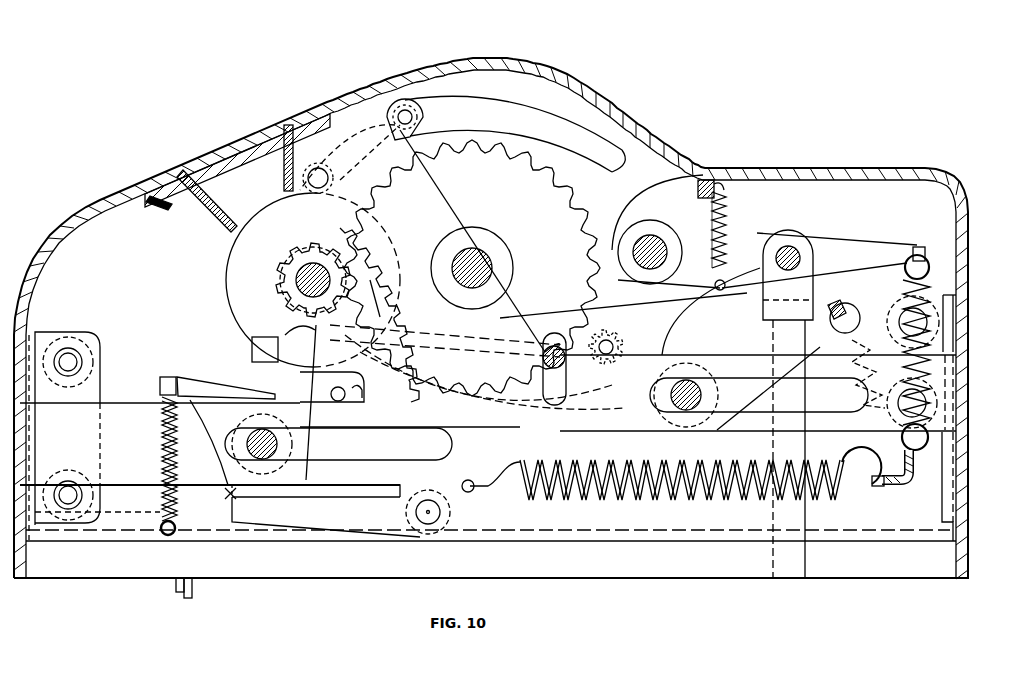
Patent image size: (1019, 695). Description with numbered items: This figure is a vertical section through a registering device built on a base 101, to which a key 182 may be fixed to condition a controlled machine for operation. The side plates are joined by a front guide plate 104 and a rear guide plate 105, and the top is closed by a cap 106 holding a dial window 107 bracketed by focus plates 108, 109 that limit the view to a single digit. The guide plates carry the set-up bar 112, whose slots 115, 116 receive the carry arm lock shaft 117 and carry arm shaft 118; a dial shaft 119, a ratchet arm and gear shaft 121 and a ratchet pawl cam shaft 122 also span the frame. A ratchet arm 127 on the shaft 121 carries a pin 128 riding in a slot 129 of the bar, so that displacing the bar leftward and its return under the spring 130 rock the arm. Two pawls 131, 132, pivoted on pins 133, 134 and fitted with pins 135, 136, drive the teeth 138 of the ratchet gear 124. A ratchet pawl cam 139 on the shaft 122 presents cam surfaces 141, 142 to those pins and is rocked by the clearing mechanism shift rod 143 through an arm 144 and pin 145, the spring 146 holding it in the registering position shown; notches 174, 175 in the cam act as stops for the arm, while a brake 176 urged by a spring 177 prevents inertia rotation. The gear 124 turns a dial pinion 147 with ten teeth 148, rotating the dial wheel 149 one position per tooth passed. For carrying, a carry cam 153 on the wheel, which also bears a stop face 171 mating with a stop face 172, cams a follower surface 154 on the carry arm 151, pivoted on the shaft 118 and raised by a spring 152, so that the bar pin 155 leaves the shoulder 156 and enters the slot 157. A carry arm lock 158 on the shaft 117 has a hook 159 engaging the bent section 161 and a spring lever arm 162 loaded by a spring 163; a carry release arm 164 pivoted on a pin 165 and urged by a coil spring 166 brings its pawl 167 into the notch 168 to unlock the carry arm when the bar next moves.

The base 101 is at (708, 562).
The front guide plate 104 is at (72, 346).
The rear guide plate 105 is at (944, 320).
The cap 106 is at (665, 160).
The dial window 107 is at (246, 122).
The focus plate 108 is at (228, 216).
The focus plate 109 is at (284, 165).
The set-up bar 112 is at (126, 468).
The slot 115 is at (364, 460).
The slot 116 is at (826, 408).
The carry arm lock shaft 117 is at (280, 444).
The carry arm shaft 118 is at (703, 397).
The dial shaft 119 is at (280, 292).
The ratchet arm and gear shaft 121 is at (494, 268).
The ratchet pawl cam shaft 122 is at (668, 250).
The ratchet gear 124 is at (584, 214).
The ratchet arm 127 is at (462, 210).
The pin 128 is at (566, 364).
The slot 129 is at (566, 384).
The spring 130 is at (660, 500).
The pawl 131 is at (405, 150).
The pawl 132 is at (492, 408).
The pin 133 is at (318, 190).
The pin 134 is at (505, 470).
The pin 135 is at (416, 111).
The pin 136 is at (690, 348).
The teeth 138 is at (522, 134).
The ratchet pawl cam 139 is at (518, 100).
The cam surface 141 is at (482, 110).
The cam surface 142 is at (446, 402).
The clearing mechanism shift rod 143 is at (790, 462).
The arm 144 is at (856, 250).
The pin 145 is at (800, 248).
The spring 146 is at (930, 292).
The dial pinion 147 is at (283, 263).
The teeth 148 is at (300, 250).
The dial wheel 149 is at (228, 302).
The carry arm 151 is at (722, 352).
The spring 152 is at (858, 314).
The carry cam 153 is at (376, 348).
The cam follower surface 154 is at (344, 370).
The pin 155 is at (333, 400).
The shoulder 156 is at (352, 402).
The slot 157 is at (362, 400).
The carry arm lock 158 is at (208, 454).
The hook 159 is at (266, 365).
The bent section 161 is at (252, 355).
The arm 162 is at (167, 377).
The spring 163 is at (164, 436).
The carry release arm 164 is at (300, 528).
The pin 165 is at (442, 512).
The coil spring 166 is at (388, 492).
The pawl 167 is at (248, 495).
The notch 168 is at (228, 506).
The stop face 171 is at (445, 317).
The stop face 172 is at (300, 340).
The notch 174 is at (610, 332).
The notch 175 is at (600, 150).
The brake 176 is at (648, 224).
The spring 177 is at (728, 212).
The key 182 is at (175, 588).